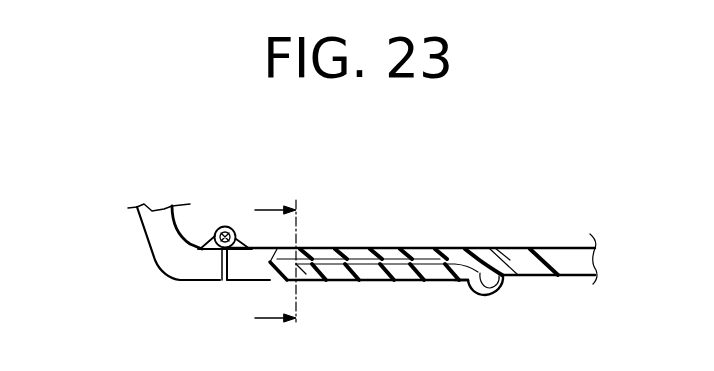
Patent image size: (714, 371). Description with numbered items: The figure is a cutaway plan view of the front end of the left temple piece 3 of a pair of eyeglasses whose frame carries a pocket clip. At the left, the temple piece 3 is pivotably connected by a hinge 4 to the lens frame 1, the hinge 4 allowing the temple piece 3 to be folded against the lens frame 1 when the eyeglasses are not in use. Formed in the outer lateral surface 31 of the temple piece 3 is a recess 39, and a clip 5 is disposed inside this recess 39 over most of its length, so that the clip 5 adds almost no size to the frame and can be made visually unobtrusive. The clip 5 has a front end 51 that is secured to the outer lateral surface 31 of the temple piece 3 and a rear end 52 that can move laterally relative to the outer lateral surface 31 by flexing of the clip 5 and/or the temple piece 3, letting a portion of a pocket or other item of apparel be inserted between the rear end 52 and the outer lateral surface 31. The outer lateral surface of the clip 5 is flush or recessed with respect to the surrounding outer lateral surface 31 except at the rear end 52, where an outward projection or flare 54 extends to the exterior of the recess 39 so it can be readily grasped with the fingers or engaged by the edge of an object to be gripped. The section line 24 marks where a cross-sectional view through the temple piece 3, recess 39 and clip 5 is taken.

The lens frame 1 is at (148, 249).
The temple piece 3 is at (415, 259).
The hinge 4 is at (225, 226).
The clip 5 is at (414, 307).
The line 24— 24 is at (264, 265).
The outer lateral surface 31 is at (575, 279).
The recess 39 is at (433, 247).
The front end 51 is at (303, 281).
The rear end 52 is at (460, 281).
The outward projection or flare 54 is at (500, 288).